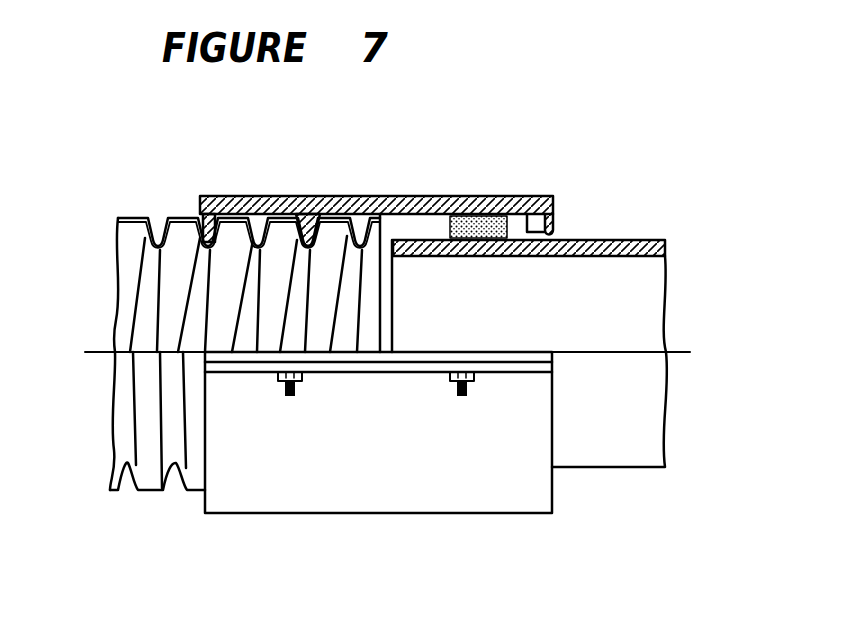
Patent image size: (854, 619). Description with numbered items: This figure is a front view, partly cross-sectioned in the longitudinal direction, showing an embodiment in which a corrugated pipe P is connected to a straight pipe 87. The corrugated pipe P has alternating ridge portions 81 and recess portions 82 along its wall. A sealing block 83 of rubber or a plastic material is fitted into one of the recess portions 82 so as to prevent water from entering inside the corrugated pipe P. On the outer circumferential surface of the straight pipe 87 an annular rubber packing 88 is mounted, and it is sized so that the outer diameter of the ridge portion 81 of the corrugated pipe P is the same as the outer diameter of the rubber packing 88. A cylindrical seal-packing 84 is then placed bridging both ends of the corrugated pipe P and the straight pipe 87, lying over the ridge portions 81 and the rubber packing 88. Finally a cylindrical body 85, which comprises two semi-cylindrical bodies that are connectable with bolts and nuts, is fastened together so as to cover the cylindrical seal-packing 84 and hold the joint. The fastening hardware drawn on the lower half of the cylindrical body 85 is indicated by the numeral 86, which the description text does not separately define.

The corrugated pipe P is at (198, 134).
The ridge portion 81 is at (204, 244).
The recess portion 82 is at (158, 246).
The sealing block 83 is at (300, 197).
The cylindrical seal-packing 84 is at (413, 197).
The cylindrical body 85 is at (480, 197).
The clamp bolt 86 is at (235, 372).
The straight pipe 87 is at (614, 240).
The annular rubber packing 88 is at (504, 212).